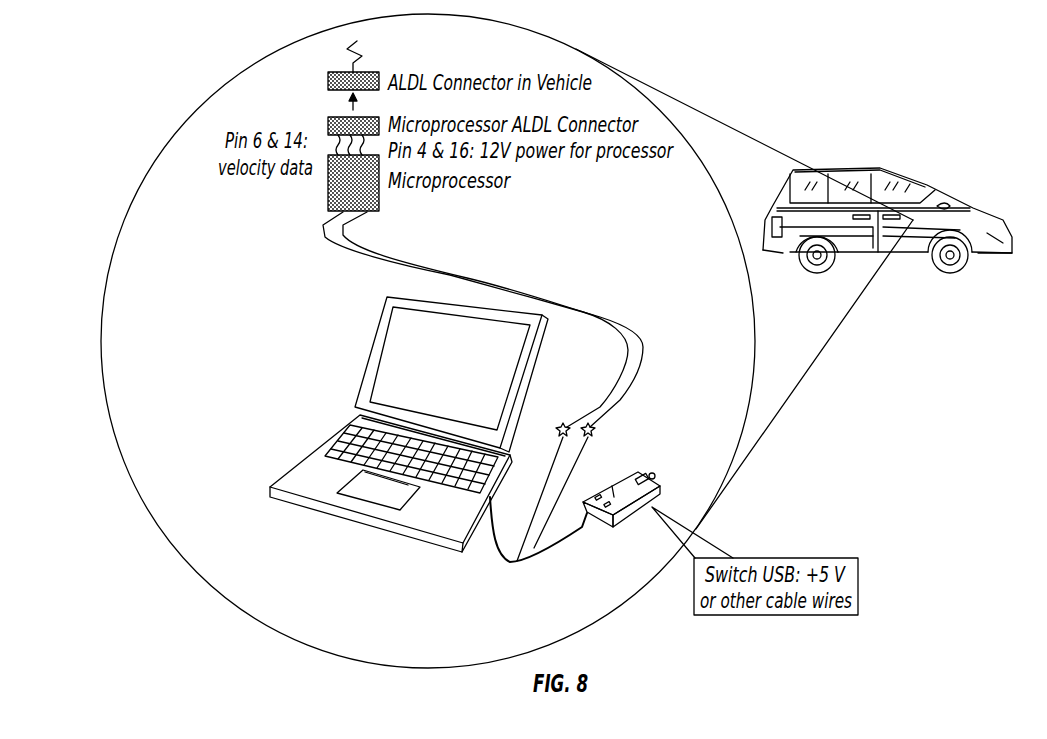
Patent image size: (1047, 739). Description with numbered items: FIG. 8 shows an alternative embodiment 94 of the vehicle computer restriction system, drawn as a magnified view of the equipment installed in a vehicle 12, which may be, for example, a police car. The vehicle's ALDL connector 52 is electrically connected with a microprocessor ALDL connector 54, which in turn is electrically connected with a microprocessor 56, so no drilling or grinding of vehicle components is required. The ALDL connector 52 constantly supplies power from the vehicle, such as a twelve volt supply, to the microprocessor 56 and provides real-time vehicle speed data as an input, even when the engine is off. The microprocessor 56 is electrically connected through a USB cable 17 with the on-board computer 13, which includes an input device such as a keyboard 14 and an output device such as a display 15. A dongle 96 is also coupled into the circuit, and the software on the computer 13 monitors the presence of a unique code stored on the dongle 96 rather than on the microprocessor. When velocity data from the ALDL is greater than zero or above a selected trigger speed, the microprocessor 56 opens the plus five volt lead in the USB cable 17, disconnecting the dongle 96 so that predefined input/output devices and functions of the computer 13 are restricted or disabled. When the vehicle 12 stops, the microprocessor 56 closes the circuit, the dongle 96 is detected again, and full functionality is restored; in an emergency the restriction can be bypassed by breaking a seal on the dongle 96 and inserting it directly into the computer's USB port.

The alternative embodiment 94 is at (665, 67).
The ALDL connector 52 is at (328, 80).
The microprocessor ALDL connector 54 is at (328, 125).
The microprocessor 56 is at (328, 183).
The computer 13 is at (403, 424).
The keyboard 14 is at (350, 437).
The display 15 is at (395, 355).
The USB cable 17 is at (500, 562).
The dongle 96 is at (609, 528).
The vehicle 12 is at (937, 187).